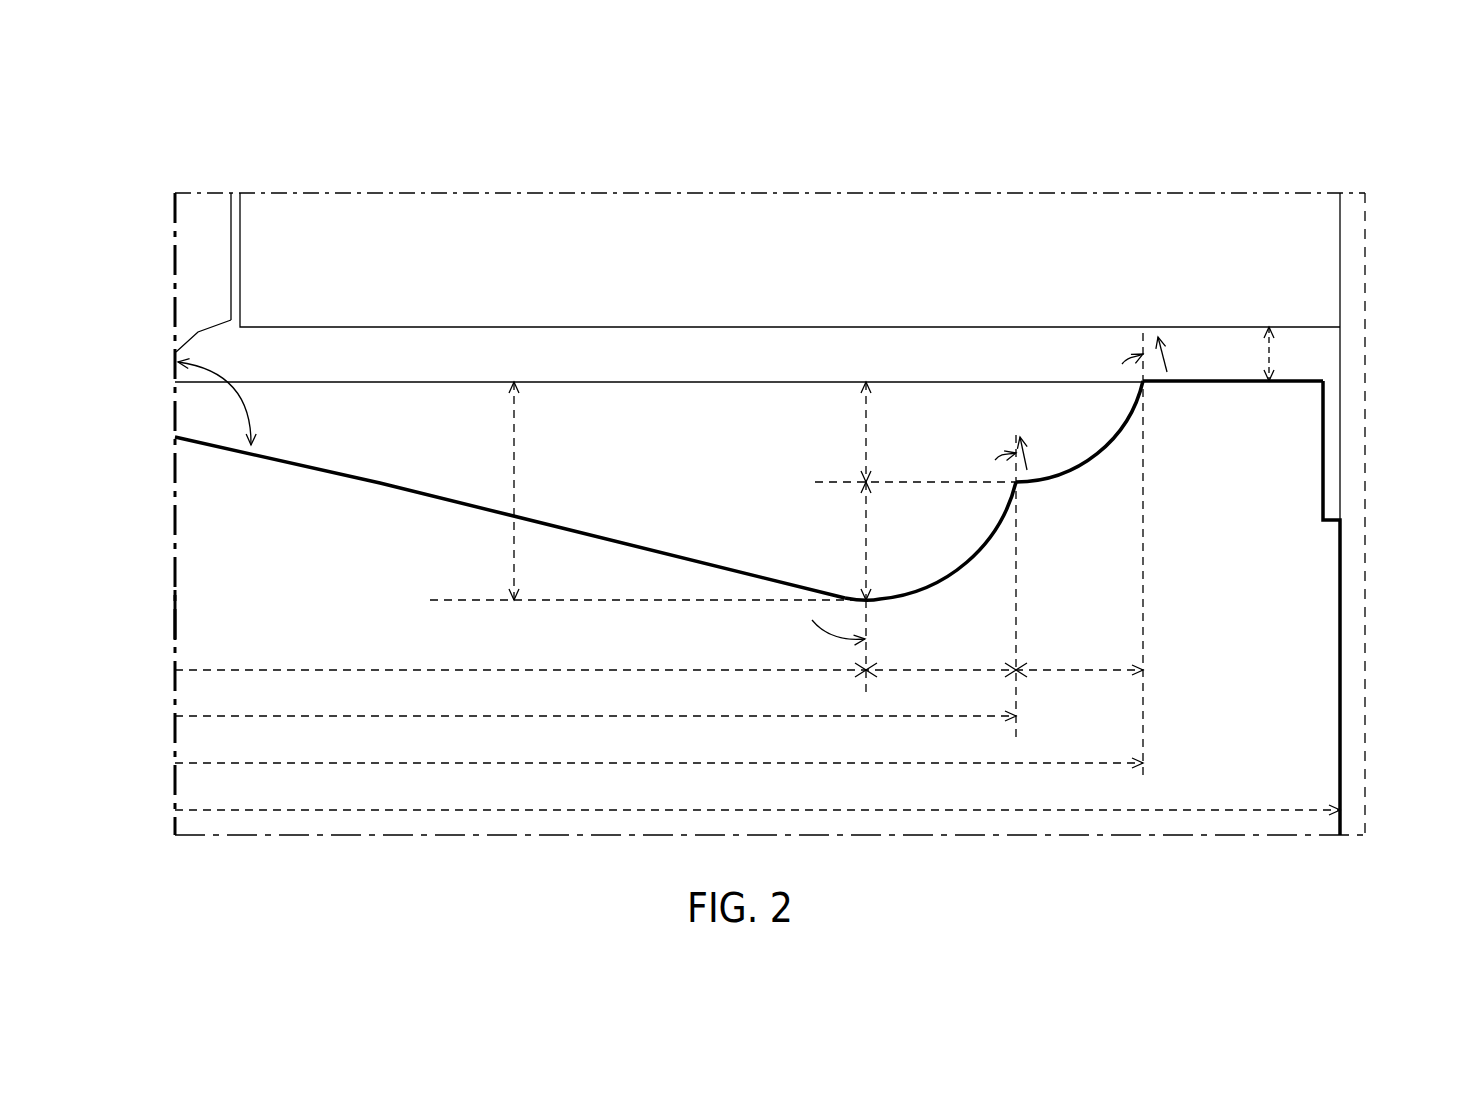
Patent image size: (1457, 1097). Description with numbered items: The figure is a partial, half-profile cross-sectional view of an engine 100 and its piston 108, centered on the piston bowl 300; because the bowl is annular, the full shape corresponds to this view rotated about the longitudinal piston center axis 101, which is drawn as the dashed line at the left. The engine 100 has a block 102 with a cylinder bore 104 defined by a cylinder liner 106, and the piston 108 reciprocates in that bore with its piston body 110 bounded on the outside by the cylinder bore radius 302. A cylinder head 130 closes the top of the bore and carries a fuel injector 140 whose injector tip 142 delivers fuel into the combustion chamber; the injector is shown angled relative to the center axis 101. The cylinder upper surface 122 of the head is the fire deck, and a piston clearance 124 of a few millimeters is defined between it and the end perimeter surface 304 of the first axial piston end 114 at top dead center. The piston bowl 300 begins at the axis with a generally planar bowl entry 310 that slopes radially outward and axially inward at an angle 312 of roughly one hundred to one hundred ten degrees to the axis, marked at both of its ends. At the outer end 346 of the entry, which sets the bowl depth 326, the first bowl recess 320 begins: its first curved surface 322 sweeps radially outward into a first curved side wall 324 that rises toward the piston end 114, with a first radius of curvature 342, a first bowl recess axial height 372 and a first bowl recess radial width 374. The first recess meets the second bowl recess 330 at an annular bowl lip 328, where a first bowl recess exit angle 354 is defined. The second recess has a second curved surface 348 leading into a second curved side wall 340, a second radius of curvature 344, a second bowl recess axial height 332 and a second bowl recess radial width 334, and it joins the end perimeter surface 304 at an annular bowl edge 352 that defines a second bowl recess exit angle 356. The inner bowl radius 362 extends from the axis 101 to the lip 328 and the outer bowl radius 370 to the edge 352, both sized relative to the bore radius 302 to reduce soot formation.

The engine 100 is at (1122, 132).
The longitudinal piston center axis 101 is at (176, 612).
The block 102 is at (1340, 770).
The cylinder bore 104 is at (1340, 655).
The cylinder liner 106 is at (1357, 728).
The piston 108 is at (157, 518).
The piston body 110 is at (1248, 608).
The first axial piston end 114 is at (1295, 370).
The cylinder upper surface 122 is at (1200, 333).
The piston clearance 124 is at (1267, 345).
The cylinder head 130 is at (745, 243).
The fuel injector 140 is at (205, 228).
The injector tip 142 is at (176, 352).
The piston bowl 300 is at (813, 551).
The cylinder bore radius 302 is at (610, 836).
The end perimeter surface 304 is at (1295, 372).
The bowl entry 310 is at (357, 481).
The angle 312 is at (252, 447).
The first bowl recess 320 is at (922, 590).
The first curved surface 322 is at (900, 603).
The first curved side wall 324 is at (958, 568).
The bowl depth 326 is at (516, 460).
The bowl lip 328 is at (1026, 490).
The second bowl recess 330 is at (1112, 448).
The second bowl recess axial height 332 is at (866, 425).
The second bowl recess radial width 334 is at (1080, 672).
The second curved side wall 340 is at (1112, 440).
The first radius of curvature 342 is at (985, 544).
The second radius of curvature 344 is at (1098, 452).
The outer end 346 is at (870, 598).
The second curved surface 348 is at (1098, 450).
The bowl edge 352 is at (1150, 385).
The first bowl recess exit angle 354 is at (1035, 462).
The second bowl recess exit angle 356 is at (1155, 355).
The inner bowl radius 362 is at (670, 718).
The outer bowl radius 370 is at (848, 766).
The first bowl recess axial height 372 is at (866, 520).
The first bowl recess radial width 374 is at (935, 672).